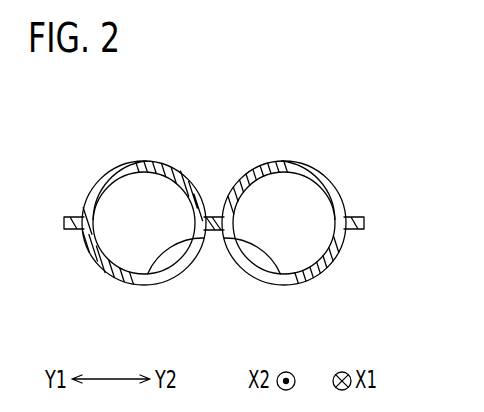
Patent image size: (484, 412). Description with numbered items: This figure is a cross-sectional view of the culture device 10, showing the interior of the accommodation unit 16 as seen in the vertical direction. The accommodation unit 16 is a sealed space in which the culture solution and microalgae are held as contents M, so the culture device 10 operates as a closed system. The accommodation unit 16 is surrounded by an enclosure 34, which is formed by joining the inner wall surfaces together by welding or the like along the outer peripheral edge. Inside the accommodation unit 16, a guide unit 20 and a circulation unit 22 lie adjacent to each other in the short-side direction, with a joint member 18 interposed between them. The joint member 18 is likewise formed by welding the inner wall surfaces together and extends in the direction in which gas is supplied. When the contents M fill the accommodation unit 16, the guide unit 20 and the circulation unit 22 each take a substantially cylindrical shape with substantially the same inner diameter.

The culture device 10 is at (433, 59).
The accommodation unit 16 is at (302, 108).
The joint member 18 is at (213, 232).
The guide unit 20 is at (150, 200).
The circulation unit 22 is at (275, 200).
The enclosure 34 is at (75, 215).
The contents M is at (133, 263).